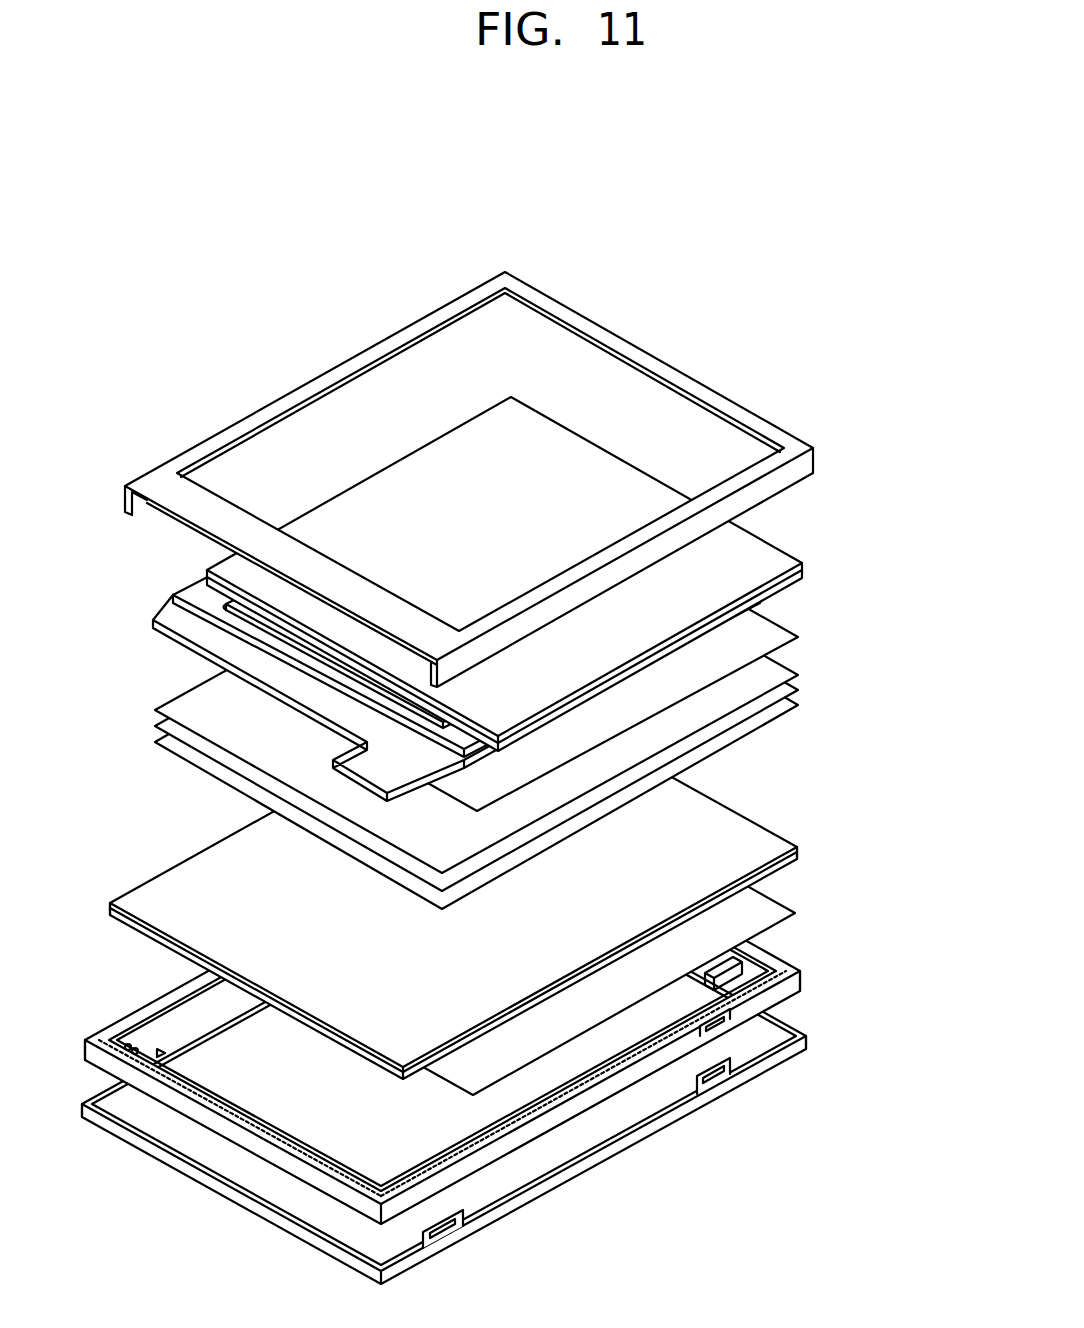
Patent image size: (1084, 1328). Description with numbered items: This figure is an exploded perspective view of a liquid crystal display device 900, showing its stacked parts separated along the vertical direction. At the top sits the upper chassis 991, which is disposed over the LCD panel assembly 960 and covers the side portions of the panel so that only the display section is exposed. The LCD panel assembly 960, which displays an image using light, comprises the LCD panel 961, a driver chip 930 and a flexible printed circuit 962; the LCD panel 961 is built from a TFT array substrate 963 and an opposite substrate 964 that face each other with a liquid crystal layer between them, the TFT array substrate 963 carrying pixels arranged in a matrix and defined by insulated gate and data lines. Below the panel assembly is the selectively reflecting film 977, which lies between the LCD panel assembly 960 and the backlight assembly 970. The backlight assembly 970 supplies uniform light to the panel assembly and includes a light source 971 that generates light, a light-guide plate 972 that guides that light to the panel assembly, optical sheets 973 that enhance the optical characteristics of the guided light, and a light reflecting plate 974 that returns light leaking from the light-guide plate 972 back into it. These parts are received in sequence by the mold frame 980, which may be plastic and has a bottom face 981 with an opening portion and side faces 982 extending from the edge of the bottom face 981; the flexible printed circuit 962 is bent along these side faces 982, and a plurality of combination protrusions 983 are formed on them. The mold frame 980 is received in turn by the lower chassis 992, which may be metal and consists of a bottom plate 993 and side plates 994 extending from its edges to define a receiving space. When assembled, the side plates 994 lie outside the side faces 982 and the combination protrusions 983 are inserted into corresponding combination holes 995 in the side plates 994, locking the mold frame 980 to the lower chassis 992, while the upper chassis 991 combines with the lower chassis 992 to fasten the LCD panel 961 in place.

The liquid crystal display device 900 is at (566, 181).
The upper chassis 991 is at (733, 410).
The LCD panel assembly 960 is at (515, 599).
The LCD panel 961 is at (520, 577).
The opposite substrate 964 is at (803, 563).
The TFT array substrate 963 is at (491, 577).
The flexible printed circuit 962 is at (235, 645).
The driver chip 930 is at (178, 629).
The backlight assembly 970 is at (490, 784).
The selectively reflecting film 977 is at (532, 642).
The optical sheets 973 is at (806, 674).
The light-guide plate 972 is at (800, 847).
The light source 971 is at (110, 906).
The light reflecting plate 974 is at (798, 913).
The mold frame 980 is at (479, 1014).
The bottom face 981 is at (250, 1130).
The side faces 982 is at (530, 1126).
The combination protrusions 983 is at (718, 1022).
The lower chassis 992 is at (478, 1076).
The bottom plate 993 is at (517, 1177).
The side plates 994 is at (630, 1137).
The combination holes 995 is at (718, 1084).